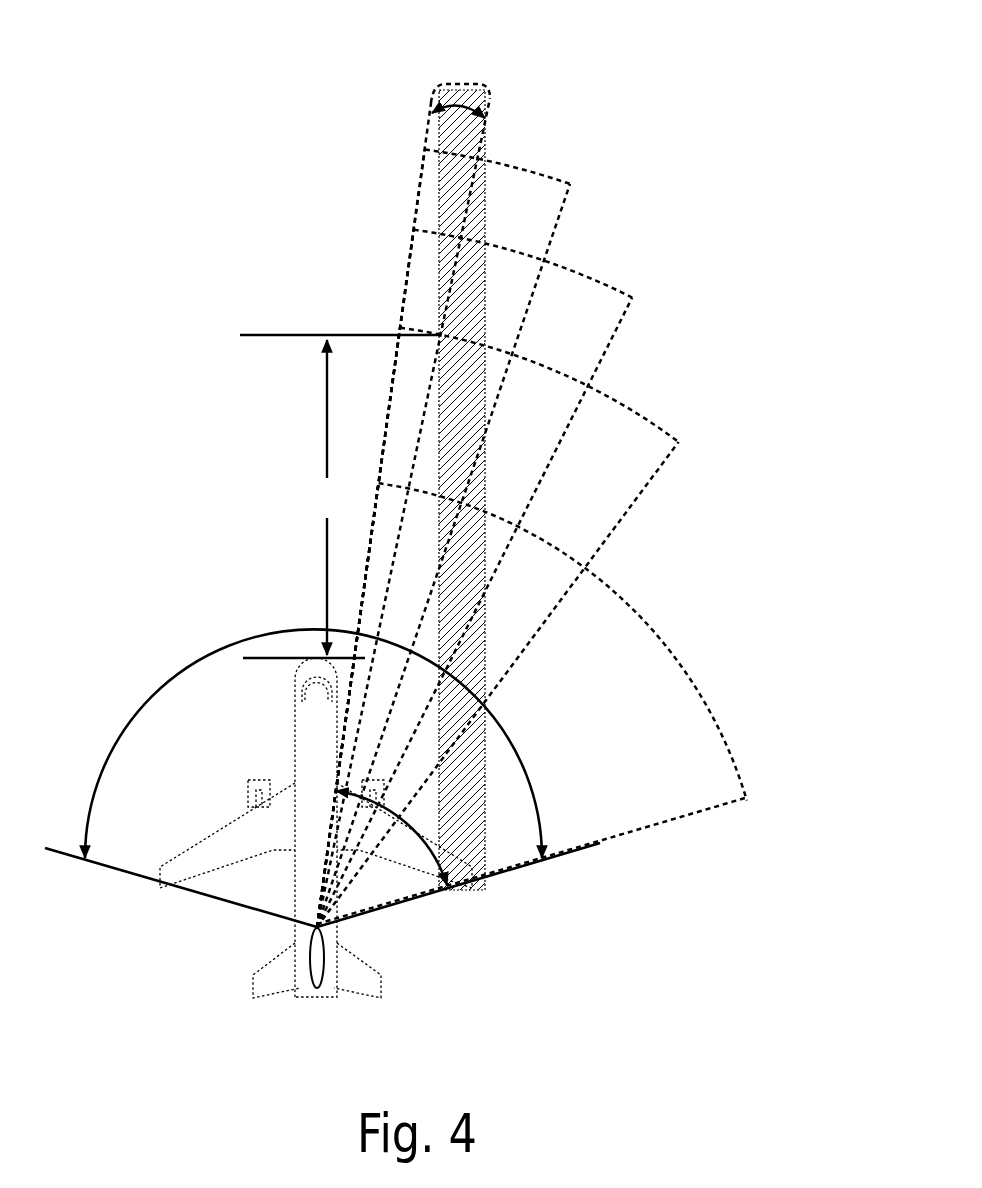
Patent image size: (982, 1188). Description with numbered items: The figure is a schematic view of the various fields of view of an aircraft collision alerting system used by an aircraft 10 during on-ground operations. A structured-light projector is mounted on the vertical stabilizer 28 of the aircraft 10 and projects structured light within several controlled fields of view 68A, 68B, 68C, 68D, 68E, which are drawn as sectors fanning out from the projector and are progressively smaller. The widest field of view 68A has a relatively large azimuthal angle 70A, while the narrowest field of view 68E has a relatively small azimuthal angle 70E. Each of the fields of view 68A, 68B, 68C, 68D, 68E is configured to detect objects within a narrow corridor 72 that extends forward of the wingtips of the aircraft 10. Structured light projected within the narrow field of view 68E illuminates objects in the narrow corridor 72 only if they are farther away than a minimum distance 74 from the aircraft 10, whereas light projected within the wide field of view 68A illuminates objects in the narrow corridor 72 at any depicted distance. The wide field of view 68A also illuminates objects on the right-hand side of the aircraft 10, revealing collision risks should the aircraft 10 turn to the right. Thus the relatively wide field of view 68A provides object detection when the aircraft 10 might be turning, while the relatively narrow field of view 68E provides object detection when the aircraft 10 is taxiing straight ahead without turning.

The aircraft 10 is at (233, 920).
The vertical stabilizer 28 is at (310, 967).
The field of view 68A is at (738, 747).
The field of view 68B is at (667, 425).
The field of view 68C is at (608, 277).
The field of view 68D is at (555, 160).
The field of view 68E is at (418, 130).
The azimuthal angle 70A is at (423, 827).
The azimuthal angle 70E is at (455, 107).
The narrow corridor 72 is at (508, 748).
The minimum distance 74 is at (340, 496).